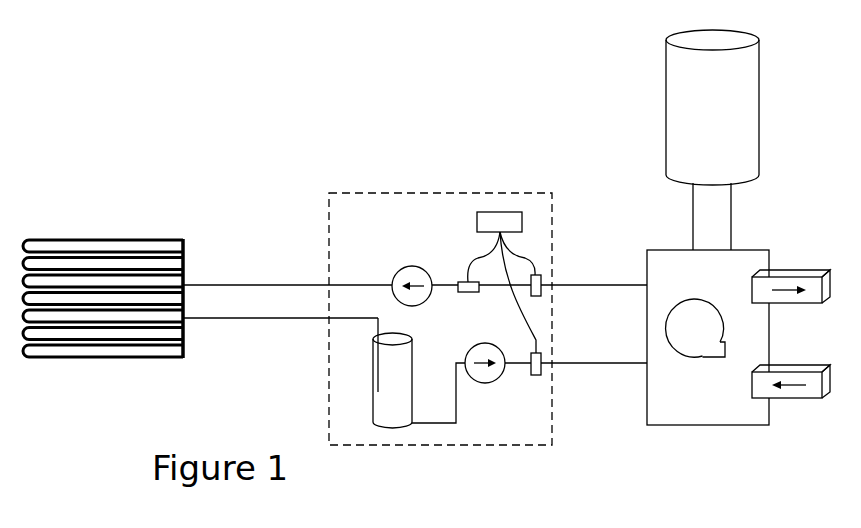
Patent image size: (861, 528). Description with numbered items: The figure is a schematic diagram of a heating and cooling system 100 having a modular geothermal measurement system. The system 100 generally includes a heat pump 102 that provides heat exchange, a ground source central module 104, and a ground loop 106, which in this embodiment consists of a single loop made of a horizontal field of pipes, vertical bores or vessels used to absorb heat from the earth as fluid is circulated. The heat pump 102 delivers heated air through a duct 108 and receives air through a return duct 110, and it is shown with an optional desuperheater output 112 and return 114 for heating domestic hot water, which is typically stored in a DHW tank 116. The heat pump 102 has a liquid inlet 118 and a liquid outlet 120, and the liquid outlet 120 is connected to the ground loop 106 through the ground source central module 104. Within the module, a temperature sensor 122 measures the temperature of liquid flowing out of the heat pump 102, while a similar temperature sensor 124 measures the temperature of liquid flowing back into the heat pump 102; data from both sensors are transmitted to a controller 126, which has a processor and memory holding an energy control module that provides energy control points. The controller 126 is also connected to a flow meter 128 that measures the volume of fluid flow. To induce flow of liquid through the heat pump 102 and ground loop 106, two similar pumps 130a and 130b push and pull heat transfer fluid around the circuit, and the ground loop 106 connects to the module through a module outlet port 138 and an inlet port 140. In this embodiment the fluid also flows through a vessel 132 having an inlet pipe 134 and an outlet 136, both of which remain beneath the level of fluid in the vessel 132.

The heating and cooling system 100 is at (228, 165).
The heat pump 102 is at (758, 425).
The ground source central module 104 is at (552, 232).
The ground loop 106 is at (68, 238).
The duct 108 is at (793, 270).
The return duct 110 is at (782, 363).
The desuperheater output 112 is at (693, 248).
The desuperheater return 114 is at (732, 248).
The DHW tank 116 is at (760, 145).
The liquid inlet 118 is at (645, 362).
The liquid outlet 120 is at (645, 283).
The temperature sensor 122 is at (541, 280).
The temperature sensor 124 is at (541, 370).
The controller 126 is at (515, 212).
The flow meter 128 is at (463, 282).
The pump 130a is at (473, 348).
The pump 130b is at (406, 267).
The vessel 132 is at (373, 412).
The inlet pipe 134 is at (378, 377).
The outlet 136 is at (458, 397).
The module outlet port 138 is at (328, 285).
The module inlet port 140 is at (326, 320).